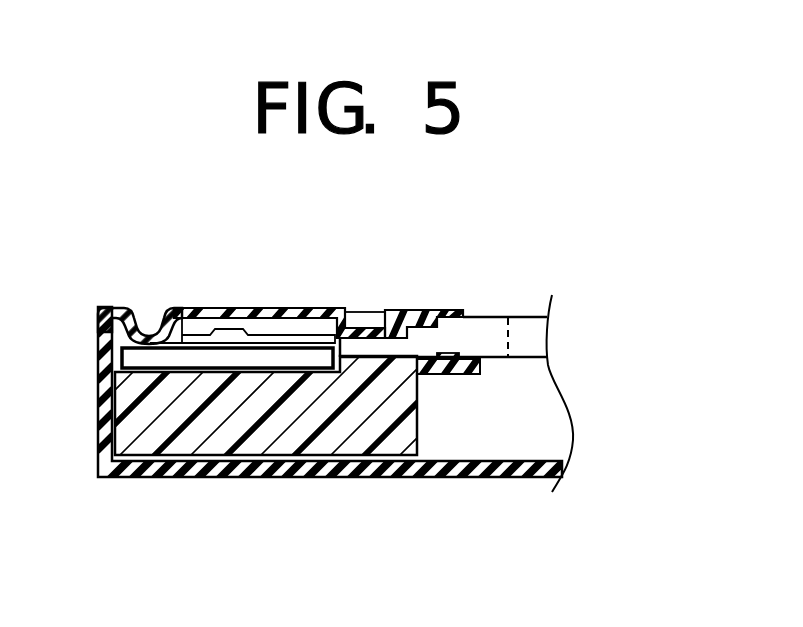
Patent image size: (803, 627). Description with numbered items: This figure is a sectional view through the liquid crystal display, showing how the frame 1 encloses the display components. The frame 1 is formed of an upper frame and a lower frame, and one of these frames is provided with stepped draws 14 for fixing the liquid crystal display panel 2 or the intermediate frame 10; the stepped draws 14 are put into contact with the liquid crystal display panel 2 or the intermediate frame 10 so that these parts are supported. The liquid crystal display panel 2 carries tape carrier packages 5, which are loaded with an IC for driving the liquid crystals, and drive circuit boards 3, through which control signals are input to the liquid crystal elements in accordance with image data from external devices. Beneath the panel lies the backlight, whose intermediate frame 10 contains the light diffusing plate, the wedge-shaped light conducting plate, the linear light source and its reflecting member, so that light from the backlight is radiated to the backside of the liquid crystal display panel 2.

The frame 1 is at (427, 310).
The liquid crystal display panel 2 is at (523, 341).
The drive circuit board 3 is at (268, 309).
The tape carrier package 5 is at (241, 309).
The intermediate frame 10 is at (203, 423).
The stepped draw 14 is at (373, 326).